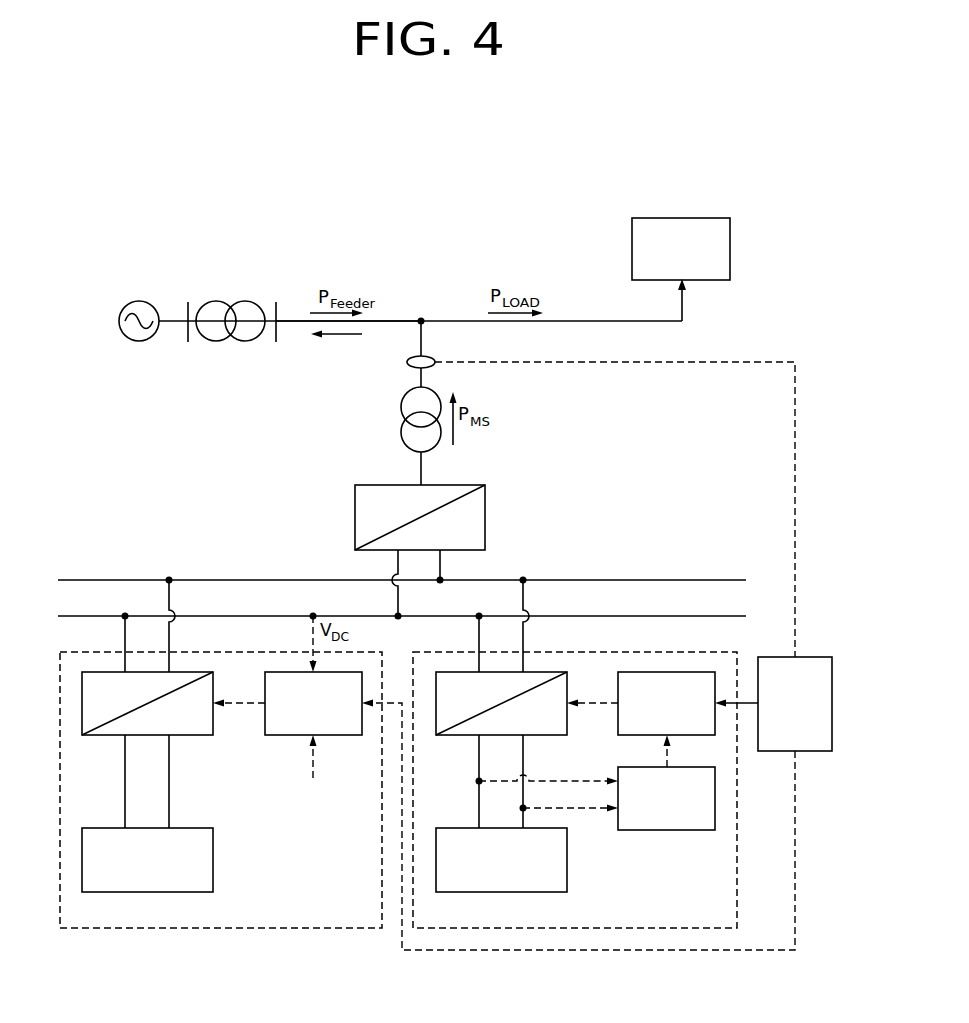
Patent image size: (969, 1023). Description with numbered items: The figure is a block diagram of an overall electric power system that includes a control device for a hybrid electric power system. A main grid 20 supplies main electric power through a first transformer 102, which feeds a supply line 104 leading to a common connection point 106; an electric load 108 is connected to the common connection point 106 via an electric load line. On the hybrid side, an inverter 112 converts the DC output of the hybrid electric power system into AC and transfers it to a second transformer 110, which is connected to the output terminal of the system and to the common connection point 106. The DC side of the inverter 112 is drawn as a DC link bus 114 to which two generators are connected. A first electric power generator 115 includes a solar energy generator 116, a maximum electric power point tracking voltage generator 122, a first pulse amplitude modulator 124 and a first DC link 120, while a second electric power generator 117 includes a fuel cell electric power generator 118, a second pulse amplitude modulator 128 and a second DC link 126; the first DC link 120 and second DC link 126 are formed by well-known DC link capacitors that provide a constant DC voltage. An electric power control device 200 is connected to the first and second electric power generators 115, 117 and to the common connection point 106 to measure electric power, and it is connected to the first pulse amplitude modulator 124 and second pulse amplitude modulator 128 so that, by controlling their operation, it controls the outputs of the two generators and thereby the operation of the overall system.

The main grid 20 is at (139, 301).
The first transformer 102 is at (216, 301).
The supply line 104 is at (296, 319).
The common connection point (PCC) 106 is at (416, 321).
The electric load 108 is at (698, 274).
The second transformer 110 is at (401, 407).
The inverter 112 is at (355, 517).
The DC link 114 is at (105, 580).
The first electric power generator 115 is at (730, 919).
The solar energy generator (PV) 116 is at (519, 884).
The second electric power generator 117 is at (371, 919).
The fuel cell electric power generator (FC) 118 is at (165, 884).
The first DC link 120 is at (553, 672).
The maximum electric power point tracking (MPPT) voltage generator 122 is at (683, 820).
The first pulse amplitude modulator (PWM1) 124 is at (683, 725).
The second DC link 126 is at (198, 737).
The second pulse amplitude modulator (PWM2) 128 is at (330, 725).
The electric power control device 200 is at (813, 740).